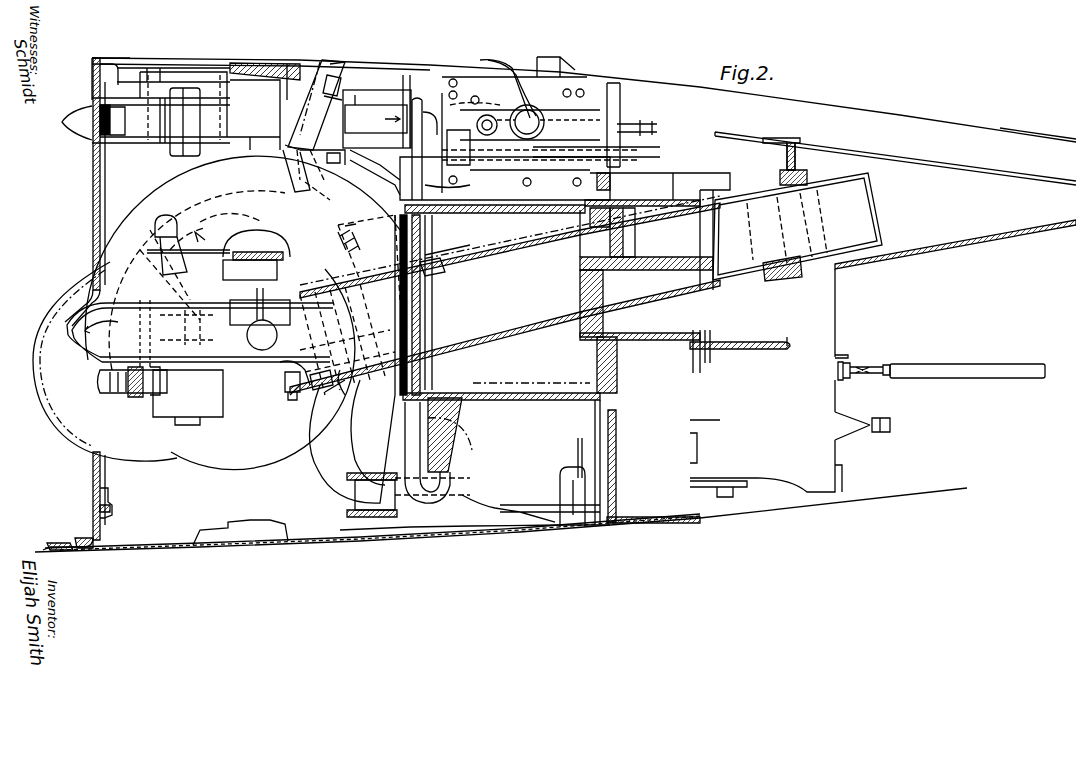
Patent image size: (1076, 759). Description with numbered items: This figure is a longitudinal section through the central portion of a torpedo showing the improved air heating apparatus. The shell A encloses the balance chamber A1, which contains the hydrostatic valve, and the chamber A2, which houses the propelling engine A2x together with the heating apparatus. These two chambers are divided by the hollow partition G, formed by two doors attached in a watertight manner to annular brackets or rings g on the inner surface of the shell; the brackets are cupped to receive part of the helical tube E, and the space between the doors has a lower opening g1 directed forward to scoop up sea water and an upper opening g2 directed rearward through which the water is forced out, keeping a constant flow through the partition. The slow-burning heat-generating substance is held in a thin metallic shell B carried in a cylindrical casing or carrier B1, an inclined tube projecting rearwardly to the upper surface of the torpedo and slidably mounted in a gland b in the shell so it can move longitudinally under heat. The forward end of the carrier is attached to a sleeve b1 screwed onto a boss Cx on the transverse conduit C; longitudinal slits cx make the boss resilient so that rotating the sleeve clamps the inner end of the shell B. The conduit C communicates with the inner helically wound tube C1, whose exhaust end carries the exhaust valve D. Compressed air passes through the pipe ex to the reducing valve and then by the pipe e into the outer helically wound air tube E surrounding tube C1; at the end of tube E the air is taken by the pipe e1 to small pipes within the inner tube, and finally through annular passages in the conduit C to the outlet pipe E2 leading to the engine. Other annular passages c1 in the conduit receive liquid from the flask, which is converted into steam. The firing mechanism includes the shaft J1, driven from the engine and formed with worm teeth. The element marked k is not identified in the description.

The shell A is at (255, 64).
The upper opening g2 is at (105, 63).
The balance chamber A1 is at (93, 492).
The hollow partition G is at (92, 500).
The annular brackets or rings g is at (110, 506).
The lower opening g1 is at (95, 546).
The exhaust valve D is at (331, 64).
The pipe ex is at (372, 117).
The shaft J1 is at (648, 152).
The gland b is at (800, 160).
The thin metallic shell B is at (470, 330).
The cylindrical casing or carrier B1 is at (441, 258).
The propelling engine A2x is at (556, 304).
The chamber A2 is at (520, 464).
The air tube E is at (78, 338).
The pipe e is at (240, 216).
The pipe e1 is at (165, 226).
The inner helically wound tube C1 is at (130, 306).
The transverse conduit C is at (244, 395).
The boss Cx is at (340, 332).
The longitudinal slits cx is at (304, 380).
The annular passages c1 is at (333, 162).
The spring k is at (340, 228).
The sleeve b1 is at (318, 430).
The outlet pipe E2 is at (332, 480).